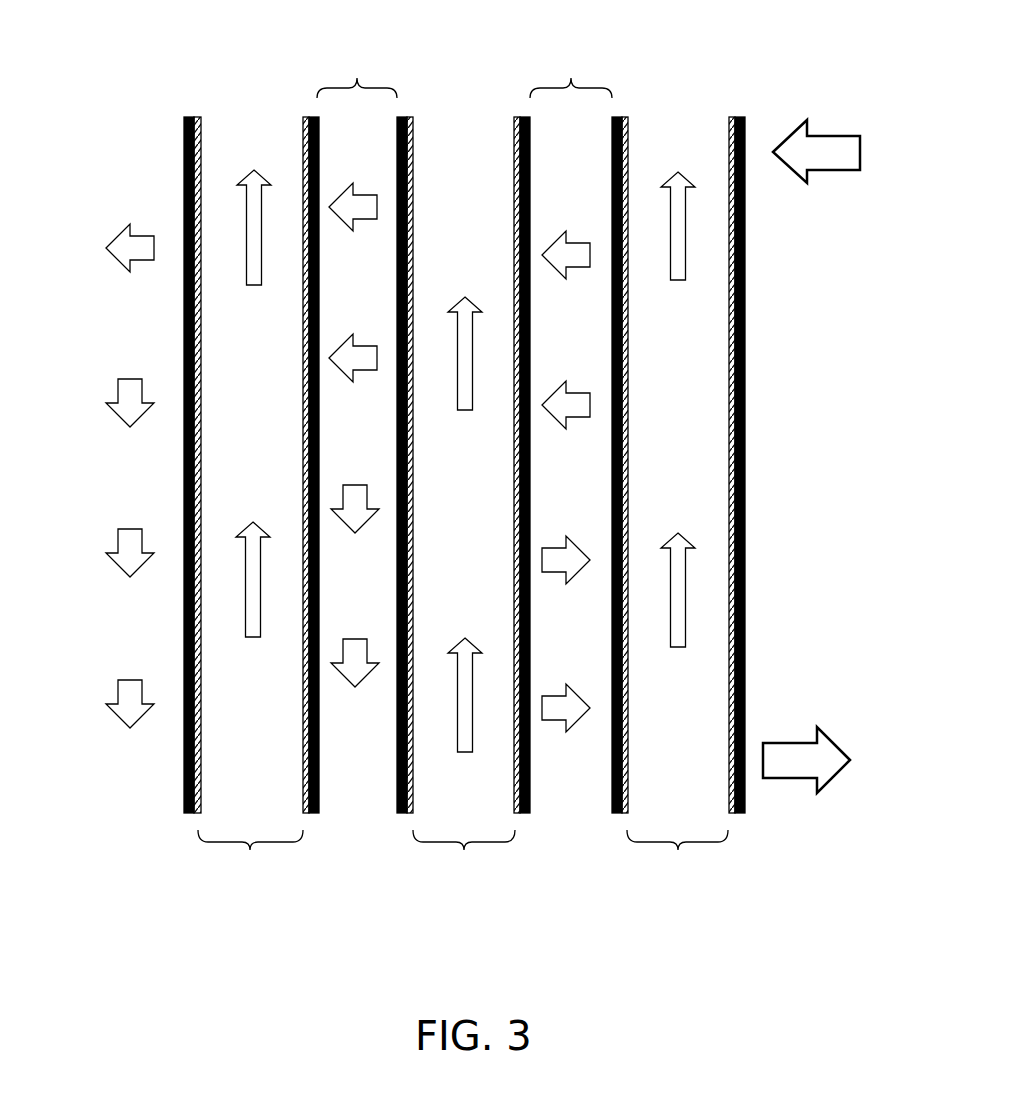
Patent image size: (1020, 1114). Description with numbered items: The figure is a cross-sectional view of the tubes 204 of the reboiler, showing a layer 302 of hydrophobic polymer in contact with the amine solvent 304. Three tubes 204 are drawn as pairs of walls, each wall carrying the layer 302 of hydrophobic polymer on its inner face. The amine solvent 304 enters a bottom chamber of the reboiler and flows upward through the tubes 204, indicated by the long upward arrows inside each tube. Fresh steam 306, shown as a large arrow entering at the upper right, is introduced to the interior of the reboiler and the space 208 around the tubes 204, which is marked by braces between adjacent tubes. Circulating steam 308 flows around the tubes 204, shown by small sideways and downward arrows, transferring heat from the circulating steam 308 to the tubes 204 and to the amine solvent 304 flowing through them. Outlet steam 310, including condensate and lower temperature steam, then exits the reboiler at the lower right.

The tubes 204 is at (250, 850).
The space 208 is at (357, 78).
The layer of hydrophobic polymer 302 is at (527, 612).
The amine solvent 304 is at (247, 286).
The fresh steam 306 is at (825, 172).
The circulating steam 308 is at (117, 228).
The outlet steam 310 is at (835, 777).